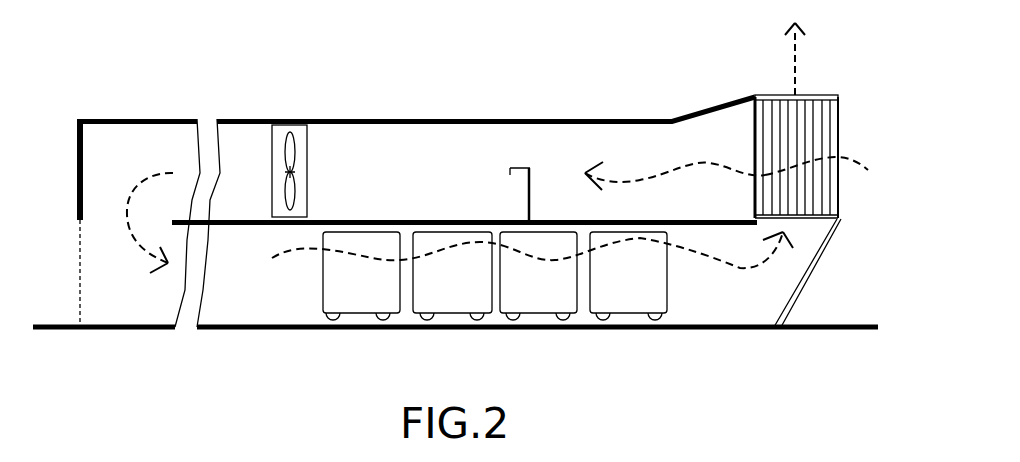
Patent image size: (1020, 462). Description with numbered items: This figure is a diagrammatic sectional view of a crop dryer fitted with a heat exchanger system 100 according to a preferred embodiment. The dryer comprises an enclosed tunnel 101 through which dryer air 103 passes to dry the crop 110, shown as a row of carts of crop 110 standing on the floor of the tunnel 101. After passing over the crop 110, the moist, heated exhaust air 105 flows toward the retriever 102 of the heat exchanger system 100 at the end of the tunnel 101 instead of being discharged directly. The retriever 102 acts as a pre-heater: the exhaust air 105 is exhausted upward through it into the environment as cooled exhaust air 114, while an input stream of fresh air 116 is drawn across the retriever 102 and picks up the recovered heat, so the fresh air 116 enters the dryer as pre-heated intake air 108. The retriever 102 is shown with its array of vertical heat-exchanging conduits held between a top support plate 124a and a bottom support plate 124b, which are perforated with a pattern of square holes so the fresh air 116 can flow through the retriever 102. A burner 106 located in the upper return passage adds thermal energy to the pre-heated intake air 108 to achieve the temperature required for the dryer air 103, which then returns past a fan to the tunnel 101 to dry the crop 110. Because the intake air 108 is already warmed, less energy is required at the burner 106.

The heat exchanger system 100 is at (745, 127).
The enclosed tunnel 101 is at (263, 303).
The retriever 102 is at (823, 195).
The dryer air 103 is at (150, 178).
The moist, heated exhaust air 105 is at (758, 270).
The burner 106 is at (522, 196).
The pre-heated intake air 108 is at (727, 167).
The crop 110 is at (383, 300).
The cooled exhaust air 114 is at (795, 63).
The fresh air 116 is at (850, 157).
The top support plate 124a is at (882, 260).
The bottom support plate 124b is at (873, 67).